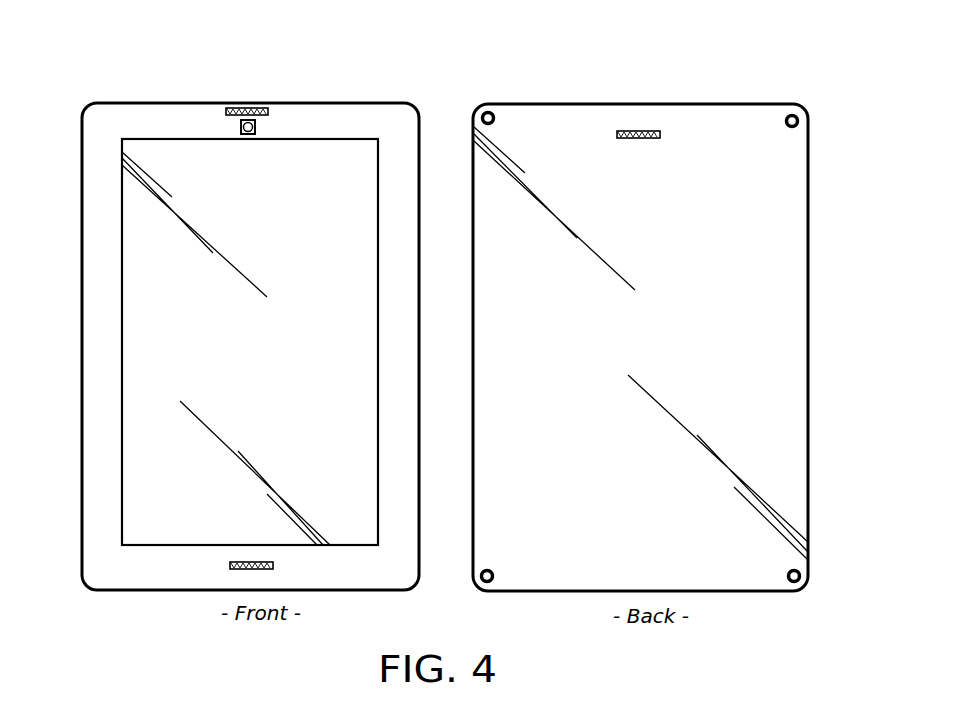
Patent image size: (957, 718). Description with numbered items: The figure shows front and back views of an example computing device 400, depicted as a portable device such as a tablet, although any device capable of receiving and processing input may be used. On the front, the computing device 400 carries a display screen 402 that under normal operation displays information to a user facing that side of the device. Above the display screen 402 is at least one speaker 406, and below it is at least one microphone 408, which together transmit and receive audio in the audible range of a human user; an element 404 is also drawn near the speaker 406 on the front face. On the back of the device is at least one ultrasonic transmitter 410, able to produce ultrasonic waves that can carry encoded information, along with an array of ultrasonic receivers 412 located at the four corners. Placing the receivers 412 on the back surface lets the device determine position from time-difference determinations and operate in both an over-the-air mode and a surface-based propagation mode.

The computing device 400 is at (838, 88).
The display screen 402 is at (122, 256).
The camera 404 is at (236, 128).
The speaker 406 is at (242, 107).
The microphone 408 is at (228, 563).
The ultrasonic transmitter 410 is at (640, 131).
The array of ultrasonic receivers 412 is at (488, 111).